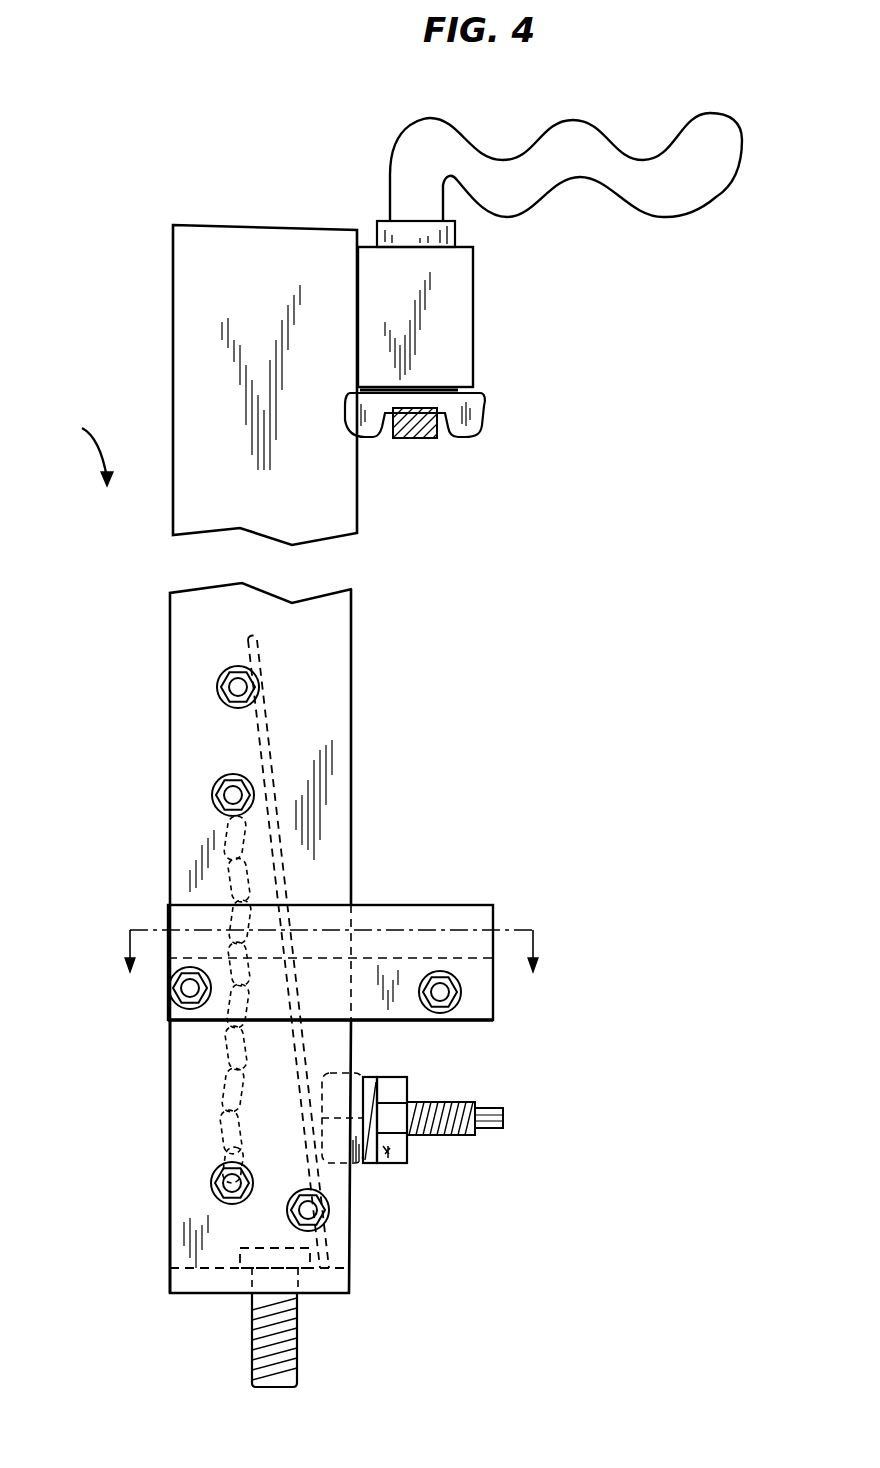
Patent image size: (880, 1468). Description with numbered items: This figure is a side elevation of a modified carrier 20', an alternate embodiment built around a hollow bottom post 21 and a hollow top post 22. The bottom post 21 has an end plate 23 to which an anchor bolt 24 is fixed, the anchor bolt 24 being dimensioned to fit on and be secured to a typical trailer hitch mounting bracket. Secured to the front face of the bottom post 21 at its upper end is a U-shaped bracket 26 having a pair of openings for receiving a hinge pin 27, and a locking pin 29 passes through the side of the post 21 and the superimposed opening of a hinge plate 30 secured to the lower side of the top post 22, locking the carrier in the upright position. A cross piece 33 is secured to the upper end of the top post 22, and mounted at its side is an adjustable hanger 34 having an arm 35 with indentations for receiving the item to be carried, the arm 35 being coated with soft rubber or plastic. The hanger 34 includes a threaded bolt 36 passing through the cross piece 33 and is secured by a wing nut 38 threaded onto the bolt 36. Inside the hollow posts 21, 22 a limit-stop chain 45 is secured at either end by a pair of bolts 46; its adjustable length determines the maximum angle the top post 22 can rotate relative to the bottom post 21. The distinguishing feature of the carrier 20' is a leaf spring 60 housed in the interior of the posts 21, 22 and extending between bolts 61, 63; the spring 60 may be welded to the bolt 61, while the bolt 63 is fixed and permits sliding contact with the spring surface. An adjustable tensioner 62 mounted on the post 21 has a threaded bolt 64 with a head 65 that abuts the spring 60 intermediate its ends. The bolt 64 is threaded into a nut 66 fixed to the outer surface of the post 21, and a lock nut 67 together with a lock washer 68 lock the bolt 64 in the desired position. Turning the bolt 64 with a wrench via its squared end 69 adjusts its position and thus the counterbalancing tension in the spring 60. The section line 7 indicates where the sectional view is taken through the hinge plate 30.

The modified carrier 20' is at (81, 442).
The hollow bottom post 21 is at (183, 1143).
The hollow top post 22 is at (183, 615).
The end plate 23 is at (333, 1285).
The anchor bolt 24 is at (280, 1348).
The U-shaped bracket 26 is at (477, 1010).
The hinge pin 27 is at (440, 992).
The locking pin 29 is at (190, 988).
The hinge plate 30 is at (478, 925).
The cross piece 33 is at (460, 328).
The adjustable hanger 34 is at (568, 118).
The arm 35 is at (670, 202).
The threaded bolt 36 is at (417, 442).
The wing nut 38 is at (470, 420).
The limit-stop chain 45 is at (213, 1048).
The bolt 46 is at (233, 795).
The leaf spring 60 is at (263, 720).
The bolt 61 is at (330, 1205).
The adjustable tensioner 62 is at (457, 1103).
The bolt 63 is at (237, 687).
The threaded bolt 64 is at (467, 1135).
The head 65 is at (352, 1062).
The nut 66 is at (358, 1170).
The lock nut 67 is at (395, 1152).
The lock washer 68 is at (367, 1080).
The squared end 69 is at (502, 1120).
The section line 7- 7 is at (331, 951).